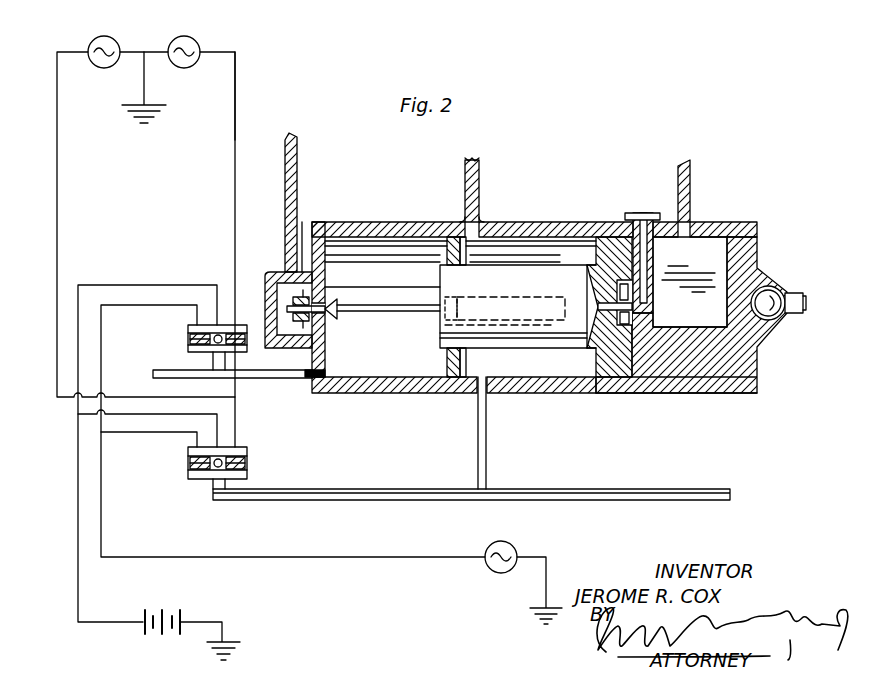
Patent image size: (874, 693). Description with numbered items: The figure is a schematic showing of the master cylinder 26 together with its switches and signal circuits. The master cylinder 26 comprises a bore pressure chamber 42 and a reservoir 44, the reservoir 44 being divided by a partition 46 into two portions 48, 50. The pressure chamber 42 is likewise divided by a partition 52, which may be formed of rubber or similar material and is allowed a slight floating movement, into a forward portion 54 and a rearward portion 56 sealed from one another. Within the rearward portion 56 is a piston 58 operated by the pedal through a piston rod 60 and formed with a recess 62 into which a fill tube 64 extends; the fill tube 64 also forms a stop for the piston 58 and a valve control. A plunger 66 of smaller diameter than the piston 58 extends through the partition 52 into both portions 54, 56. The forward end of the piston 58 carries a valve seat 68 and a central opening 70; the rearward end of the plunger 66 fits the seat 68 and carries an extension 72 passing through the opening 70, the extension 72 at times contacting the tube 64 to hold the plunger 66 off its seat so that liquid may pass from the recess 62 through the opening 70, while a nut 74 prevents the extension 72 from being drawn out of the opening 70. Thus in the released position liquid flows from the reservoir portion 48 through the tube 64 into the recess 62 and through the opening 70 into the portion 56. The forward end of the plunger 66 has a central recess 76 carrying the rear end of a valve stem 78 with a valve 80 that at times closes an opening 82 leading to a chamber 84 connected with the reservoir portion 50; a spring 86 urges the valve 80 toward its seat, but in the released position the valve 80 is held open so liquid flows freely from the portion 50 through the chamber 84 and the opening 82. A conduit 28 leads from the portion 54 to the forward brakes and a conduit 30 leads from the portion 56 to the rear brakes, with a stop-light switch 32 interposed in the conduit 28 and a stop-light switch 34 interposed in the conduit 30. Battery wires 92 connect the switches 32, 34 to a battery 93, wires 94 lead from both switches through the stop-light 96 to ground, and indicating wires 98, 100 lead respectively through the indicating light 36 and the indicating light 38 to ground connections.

The master cylinder 26 is at (724, 396).
The conduit 28 is at (292, 379).
The conduit 30 is at (486, 440).
The stop-light switch 32 is at (190, 340).
The stop-light switch 34 is at (190, 472).
The indicating light 36 is at (194, 43).
The indicating light 38 is at (108, 44).
The bore pressure chamber 42 is at (527, 241).
The reservoir 44 is at (441, 181).
The partition 46 is at (477, 188).
The reservoir portion 48 is at (661, 187).
The reservoir portion 50 is at (311, 195).
The partition 52 is at (439, 386).
The forward portion 54 is at (379, 381).
The rearward portion 56 is at (561, 360).
The piston 58 is at (731, 357).
The piston rod 60 is at (793, 300).
The recess 62 is at (705, 273).
The fill tube 64 is at (646, 266).
The plunger 66 is at (541, 329).
The valve seat 68 is at (599, 327).
The central opening 70 is at (607, 330).
The extension 72 is at (615, 330).
The nut 74 is at (633, 322).
The central recess 76 is at (494, 299).
The valve stem 78 is at (398, 311).
The valve 80 is at (333, 312).
The opening 82 is at (331, 320).
The chamber 84 is at (279, 283).
The spring 86 is at (303, 322).
The battery wires 92 is at (163, 270).
The battery 93 is at (147, 632).
The wires 94 is at (122, 305).
The stop-light 96 is at (493, 566).
The indicating wire 98 is at (235, 136).
The indicating wire 100 is at (57, 207).